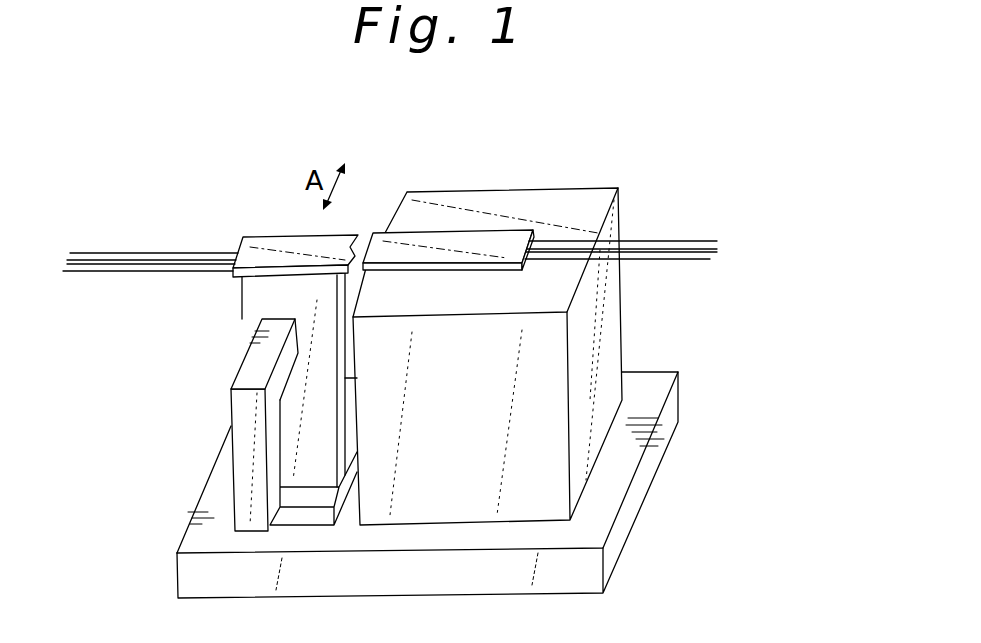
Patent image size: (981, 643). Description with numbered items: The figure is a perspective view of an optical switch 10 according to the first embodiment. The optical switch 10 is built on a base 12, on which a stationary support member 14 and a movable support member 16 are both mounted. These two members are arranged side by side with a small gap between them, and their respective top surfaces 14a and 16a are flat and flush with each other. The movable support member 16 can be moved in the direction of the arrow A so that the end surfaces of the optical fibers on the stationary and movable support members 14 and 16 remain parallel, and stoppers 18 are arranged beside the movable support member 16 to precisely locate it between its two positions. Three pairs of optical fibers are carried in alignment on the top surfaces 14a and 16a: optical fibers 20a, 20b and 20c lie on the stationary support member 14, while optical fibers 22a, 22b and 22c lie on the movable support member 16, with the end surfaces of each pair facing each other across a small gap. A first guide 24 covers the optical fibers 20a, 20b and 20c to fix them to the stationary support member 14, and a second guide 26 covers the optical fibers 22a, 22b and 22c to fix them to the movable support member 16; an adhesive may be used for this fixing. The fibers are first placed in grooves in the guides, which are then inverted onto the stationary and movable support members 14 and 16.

The optical switch 10 is at (537, 150).
The base 12 is at (543, 576).
The stationary support member 14 is at (493, 386).
The top surface of stationary support member 14a is at (573, 199).
The movable support member 16 is at (273, 455).
The top surface of movable support member 16a is at (253, 278).
The stopper 18 is at (241, 466).
The optical fiber 20a is at (655, 238).
The optical fiber 20b is at (707, 240).
The optical fiber 20c is at (693, 261).
The optical fiber 22a is at (97, 251).
The optical fiber 22b is at (160, 259).
The optical fiber 22c is at (137, 273).
The first guide 24 is at (378, 235).
The second guide 26 is at (278, 244).